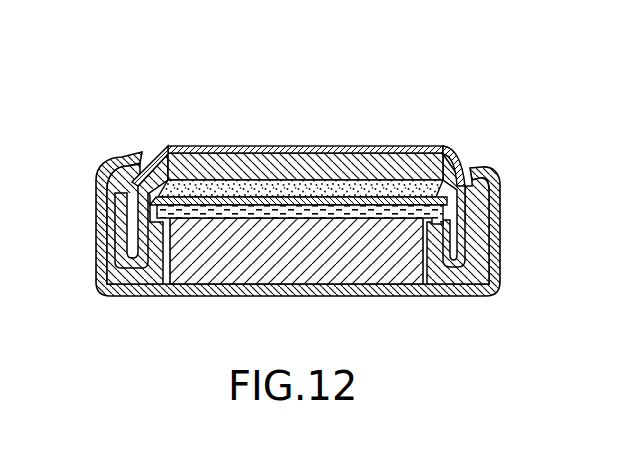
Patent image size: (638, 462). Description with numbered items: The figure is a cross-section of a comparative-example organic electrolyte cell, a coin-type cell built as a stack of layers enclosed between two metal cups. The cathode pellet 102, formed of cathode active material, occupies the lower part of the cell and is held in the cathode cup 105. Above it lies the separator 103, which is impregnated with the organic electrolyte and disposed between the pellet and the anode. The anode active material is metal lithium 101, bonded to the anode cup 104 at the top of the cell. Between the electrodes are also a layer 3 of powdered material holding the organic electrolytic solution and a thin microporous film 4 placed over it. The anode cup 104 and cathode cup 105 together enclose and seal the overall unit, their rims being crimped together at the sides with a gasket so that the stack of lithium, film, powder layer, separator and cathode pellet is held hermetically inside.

The layer of powdered material 3 is at (425, 188).
The microporous film 4 is at (244, 201).
The metal lithium 101 is at (391, 167).
The cathode pellet 102 is at (245, 276).
The separator 103 is at (343, 212).
The anode cup 104 is at (168, 146).
The cathode cup 105 is at (178, 284).